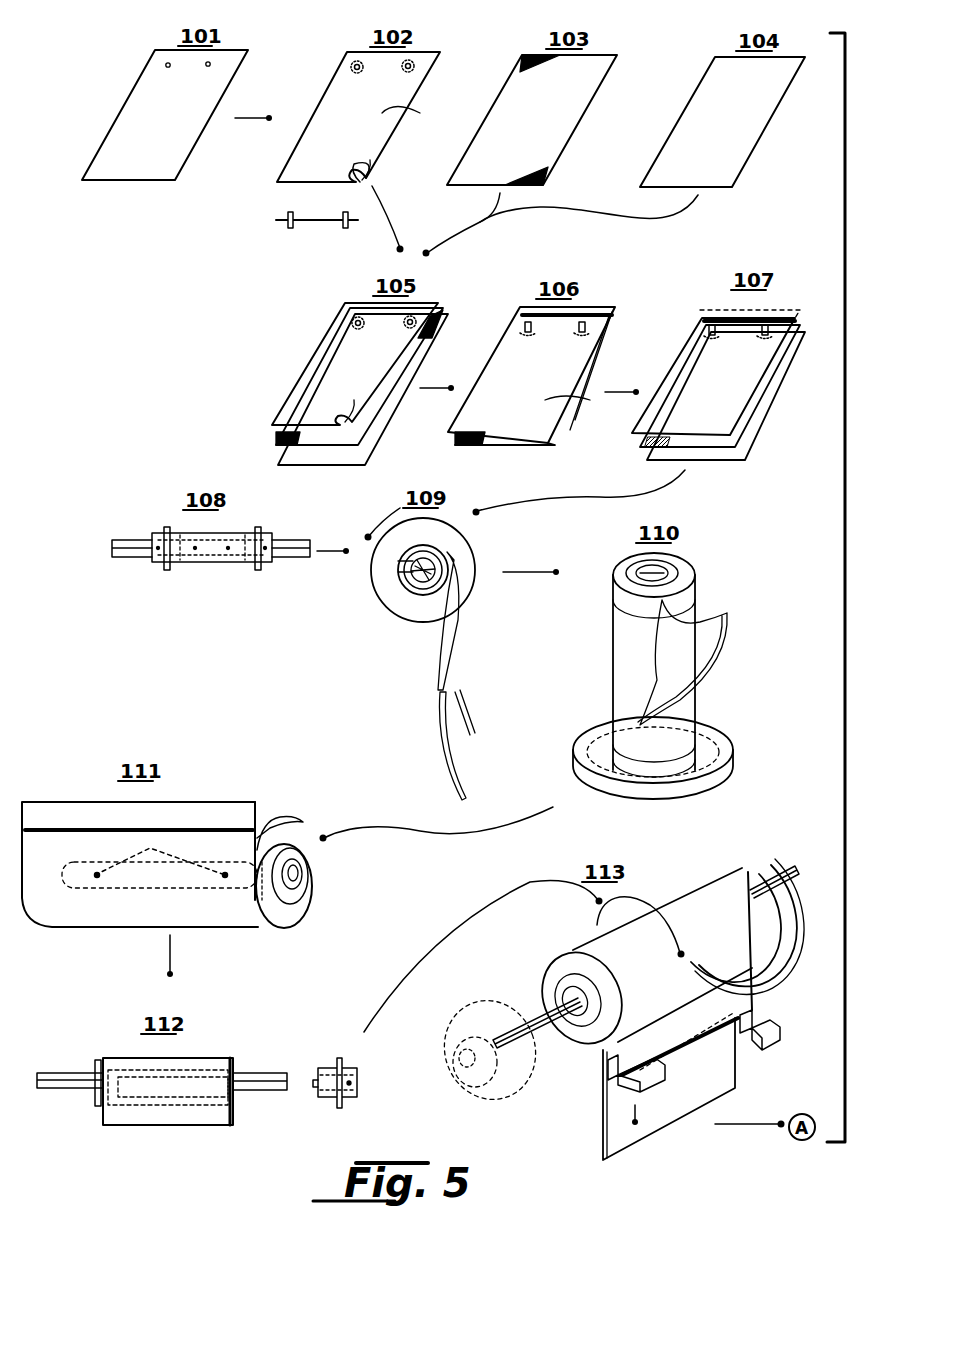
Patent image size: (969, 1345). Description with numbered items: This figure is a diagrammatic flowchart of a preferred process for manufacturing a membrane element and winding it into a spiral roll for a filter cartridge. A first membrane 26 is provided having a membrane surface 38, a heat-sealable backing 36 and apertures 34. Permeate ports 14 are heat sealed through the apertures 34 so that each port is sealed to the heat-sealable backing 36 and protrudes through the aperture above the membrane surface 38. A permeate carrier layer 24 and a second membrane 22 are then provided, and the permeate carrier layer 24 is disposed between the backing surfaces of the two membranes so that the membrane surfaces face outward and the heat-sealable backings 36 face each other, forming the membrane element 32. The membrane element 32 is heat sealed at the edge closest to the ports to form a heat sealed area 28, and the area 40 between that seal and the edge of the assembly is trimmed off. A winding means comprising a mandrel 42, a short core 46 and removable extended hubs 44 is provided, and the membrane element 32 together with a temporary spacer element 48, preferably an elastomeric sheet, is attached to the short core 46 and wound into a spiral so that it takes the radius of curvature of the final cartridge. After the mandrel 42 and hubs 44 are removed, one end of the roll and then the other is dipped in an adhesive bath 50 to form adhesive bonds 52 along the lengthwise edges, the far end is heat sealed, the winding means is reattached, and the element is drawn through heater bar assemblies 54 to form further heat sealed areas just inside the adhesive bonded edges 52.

The permeate ports 14 is at (388, 80).
The second membrane 22 is at (734, 138).
The permeate carrier layer 24 is at (542, 136).
The first membrane 26 is at (162, 137).
The heat sealed area 28 is at (607, 316).
The membrane element 32 is at (537, 378).
The apertures 34 is at (196, 82).
The heat-sealable backing 36 is at (368, 174).
The membrane surface 38 is at (504, 259).
The trimmed area 40 is at (770, 306).
The mandrel 42 is at (290, 540).
The removable extended hubs 44 is at (734, 855).
The short core 46 is at (178, 512).
The temporary spacer element 48 is at (262, 818).
The adhesive bath 50 is at (715, 757).
The adhesive bonds 52 is at (28, 900).
The heater bar assemblies 54 is at (607, 1070).